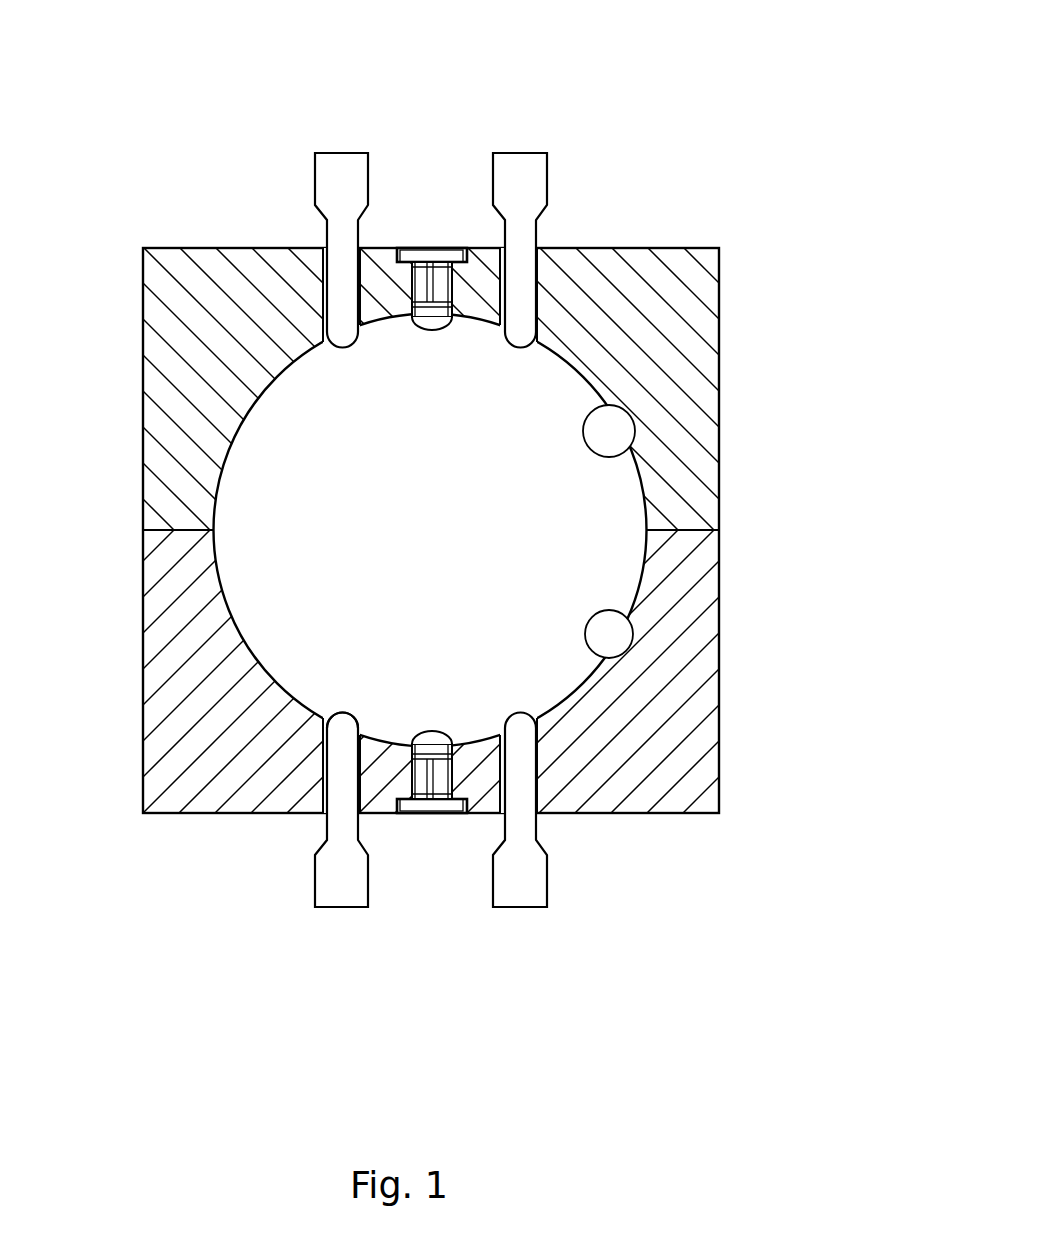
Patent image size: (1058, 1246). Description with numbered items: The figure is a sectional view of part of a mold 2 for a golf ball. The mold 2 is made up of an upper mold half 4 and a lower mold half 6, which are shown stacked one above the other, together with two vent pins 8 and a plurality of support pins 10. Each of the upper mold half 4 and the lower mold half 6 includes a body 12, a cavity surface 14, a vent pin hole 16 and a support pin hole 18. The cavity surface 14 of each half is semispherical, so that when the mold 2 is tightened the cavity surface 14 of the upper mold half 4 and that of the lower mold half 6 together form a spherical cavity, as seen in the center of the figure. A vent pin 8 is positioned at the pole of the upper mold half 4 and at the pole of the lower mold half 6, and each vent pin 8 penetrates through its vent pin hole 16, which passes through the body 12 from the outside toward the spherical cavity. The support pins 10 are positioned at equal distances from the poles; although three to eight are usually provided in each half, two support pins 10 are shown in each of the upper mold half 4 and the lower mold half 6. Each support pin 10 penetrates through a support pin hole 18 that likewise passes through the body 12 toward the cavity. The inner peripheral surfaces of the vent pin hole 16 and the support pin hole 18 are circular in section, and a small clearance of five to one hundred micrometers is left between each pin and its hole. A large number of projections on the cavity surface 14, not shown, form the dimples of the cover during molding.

The mold 2 is at (441, 406).
The upper mold half 4 is at (732, 348).
The lower mold half 6 is at (732, 713).
The vent pin 8 is at (446, 256).
The support pin 10 is at (340, 175).
The body 12 is at (233, 283).
The cavity surface 14 is at (634, 457).
The vent pin hole 16 is at (432, 730).
The support pin hole 18 is at (347, 713).